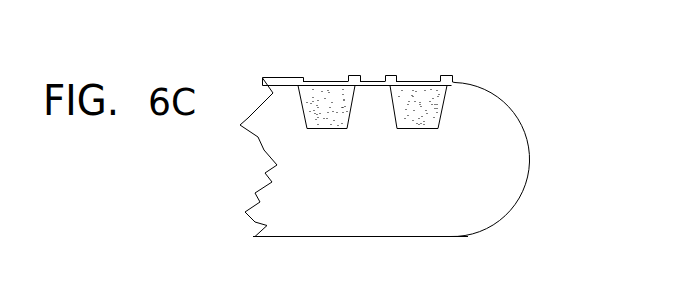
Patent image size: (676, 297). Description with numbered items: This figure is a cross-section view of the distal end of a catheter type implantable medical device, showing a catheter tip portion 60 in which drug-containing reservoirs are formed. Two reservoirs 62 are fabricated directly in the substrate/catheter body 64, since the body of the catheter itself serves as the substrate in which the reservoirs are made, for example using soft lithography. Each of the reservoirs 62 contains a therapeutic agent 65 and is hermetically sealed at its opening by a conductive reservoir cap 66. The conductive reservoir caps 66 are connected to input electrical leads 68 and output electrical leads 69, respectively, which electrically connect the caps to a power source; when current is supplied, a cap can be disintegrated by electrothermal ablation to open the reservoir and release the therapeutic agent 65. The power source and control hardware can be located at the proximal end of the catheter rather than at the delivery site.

The catheter tip portion 60 is at (553, 177).
The reservoirs 62 is at (408, 129).
The substrate/catheter body 64 is at (360, 226).
The therapeutic agent 65 is at (402, 98).
The conductive reservoir caps 66 is at (327, 81).
The input electrical leads 68 is at (354, 75).
The output electrical leads 69 is at (288, 77).